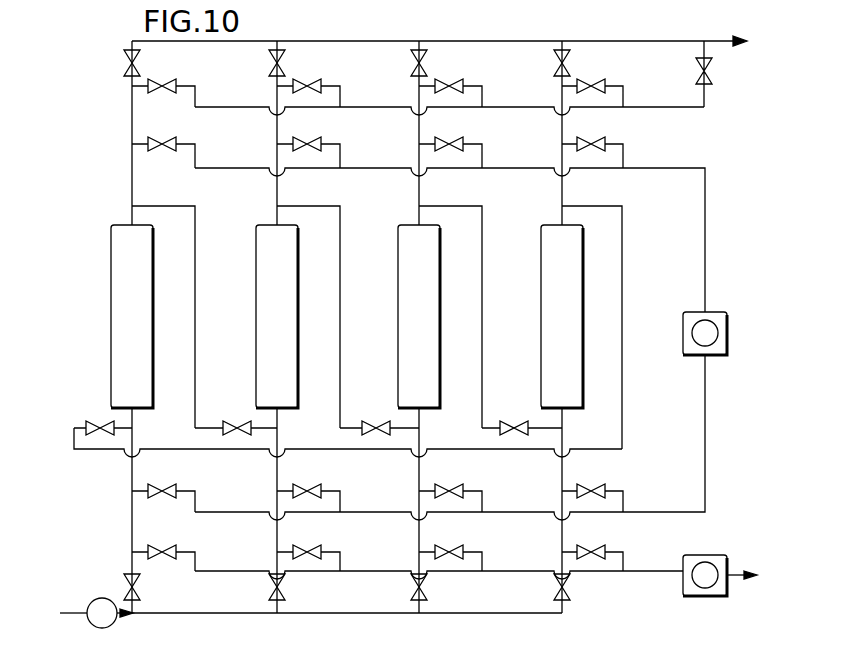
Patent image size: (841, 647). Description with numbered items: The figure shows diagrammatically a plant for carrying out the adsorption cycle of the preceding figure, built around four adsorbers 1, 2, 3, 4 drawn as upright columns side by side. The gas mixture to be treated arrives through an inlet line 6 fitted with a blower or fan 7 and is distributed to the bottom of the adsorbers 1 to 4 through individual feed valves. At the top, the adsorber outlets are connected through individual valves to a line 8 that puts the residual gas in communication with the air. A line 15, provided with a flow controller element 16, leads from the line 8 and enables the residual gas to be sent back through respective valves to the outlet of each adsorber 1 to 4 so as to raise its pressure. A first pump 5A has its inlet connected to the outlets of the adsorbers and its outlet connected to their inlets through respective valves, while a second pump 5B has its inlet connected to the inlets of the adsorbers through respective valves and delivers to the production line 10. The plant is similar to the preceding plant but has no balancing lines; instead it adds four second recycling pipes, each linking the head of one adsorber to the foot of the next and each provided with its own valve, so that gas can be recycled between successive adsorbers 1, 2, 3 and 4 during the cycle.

The adsorber 1 is at (132, 316).
The adsorber 2 is at (277, 316).
The adsorber 3 is at (419, 316).
The adsorber 4 is at (562, 316).
The pump 5A is at (683, 330).
The pump 5B is at (696, 555).
The inlet line 6 is at (88, 600).
The blower or fan 7 is at (115, 600).
The line 8 is at (640, 41).
The production line 10 is at (734, 576).
The line 15 is at (681, 110).
The flow controller element 16 is at (712, 72).